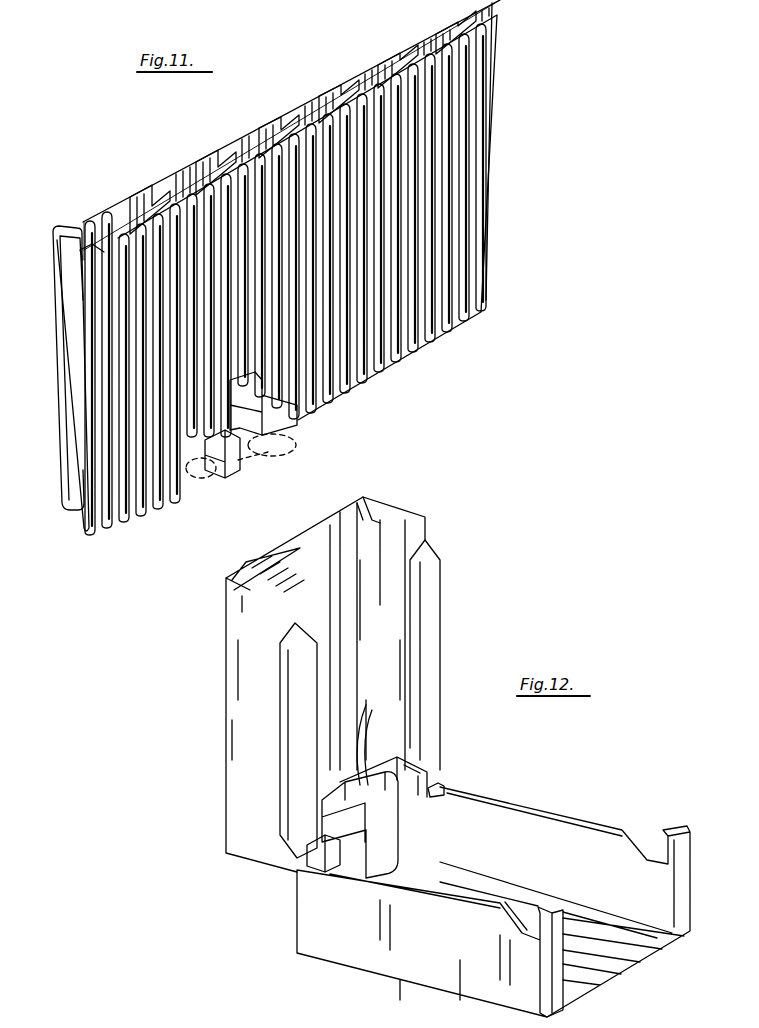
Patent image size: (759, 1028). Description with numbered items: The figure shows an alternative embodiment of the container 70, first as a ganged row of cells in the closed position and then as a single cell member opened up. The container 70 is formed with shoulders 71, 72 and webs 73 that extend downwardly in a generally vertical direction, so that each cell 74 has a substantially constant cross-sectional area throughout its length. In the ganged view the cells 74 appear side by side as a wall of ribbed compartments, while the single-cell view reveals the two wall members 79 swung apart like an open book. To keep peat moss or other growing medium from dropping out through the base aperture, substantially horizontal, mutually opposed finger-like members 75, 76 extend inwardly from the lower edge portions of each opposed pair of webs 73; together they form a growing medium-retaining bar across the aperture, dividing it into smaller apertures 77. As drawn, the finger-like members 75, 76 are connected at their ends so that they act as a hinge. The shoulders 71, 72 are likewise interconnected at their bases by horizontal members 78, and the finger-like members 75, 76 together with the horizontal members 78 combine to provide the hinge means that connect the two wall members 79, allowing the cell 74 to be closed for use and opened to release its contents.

In FIG. 11, the container 70 is at (499, 127).
In FIG. 11, the shoulder 71 is at (66, 247).
In FIG. 12, the shoulder 71 is at (393, 600).
In FIG. 11, the shoulder 72 is at (88, 292).
In FIG. 12, the shoulder 72 is at (512, 808).
In FIG. 11, the web 73 is at (106, 194).
In FIG. 12, the web 73 is at (320, 532).
In FIG. 11, the cell 74 is at (262, 120).
In FIG. 12, the cell 74 is at (366, 520).
In FIG. 11, the finger-like member 75 is at (258, 450).
In FIG. 12, the finger-like member 75 is at (358, 745).
In FIG. 11, the finger-like member 76 is at (288, 437).
In FIG. 12, the finger-like member 76 is at (402, 838).
In FIG. 12, the smaller aperture 77 is at (404, 782).
In FIG. 11, the horizontal member 78 is at (224, 460).
In FIG. 12, the horizontal member 78 is at (440, 783).
In FIG. 12, the wall member 79 is at (428, 637).